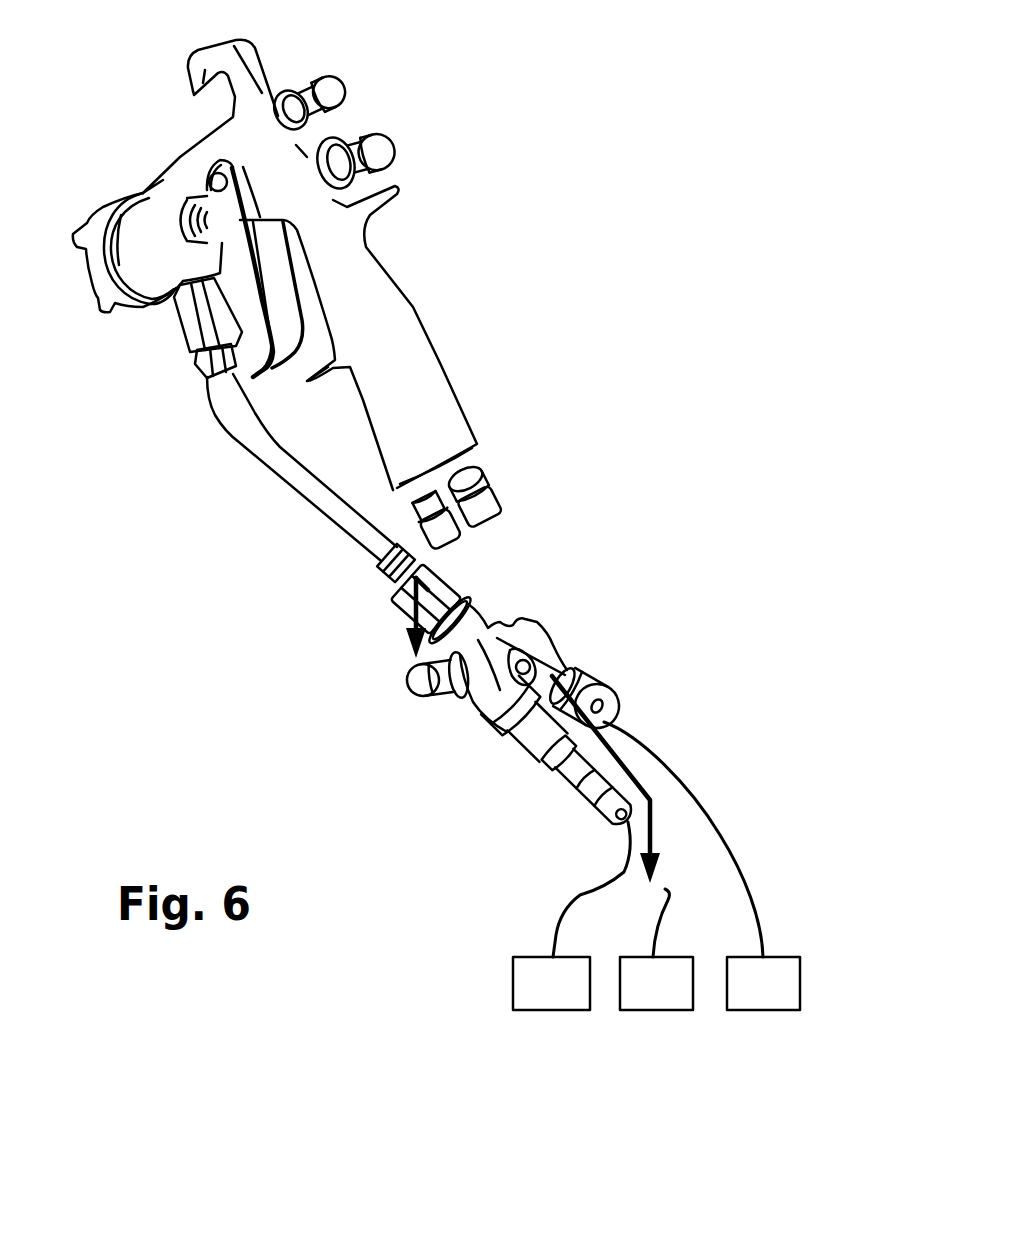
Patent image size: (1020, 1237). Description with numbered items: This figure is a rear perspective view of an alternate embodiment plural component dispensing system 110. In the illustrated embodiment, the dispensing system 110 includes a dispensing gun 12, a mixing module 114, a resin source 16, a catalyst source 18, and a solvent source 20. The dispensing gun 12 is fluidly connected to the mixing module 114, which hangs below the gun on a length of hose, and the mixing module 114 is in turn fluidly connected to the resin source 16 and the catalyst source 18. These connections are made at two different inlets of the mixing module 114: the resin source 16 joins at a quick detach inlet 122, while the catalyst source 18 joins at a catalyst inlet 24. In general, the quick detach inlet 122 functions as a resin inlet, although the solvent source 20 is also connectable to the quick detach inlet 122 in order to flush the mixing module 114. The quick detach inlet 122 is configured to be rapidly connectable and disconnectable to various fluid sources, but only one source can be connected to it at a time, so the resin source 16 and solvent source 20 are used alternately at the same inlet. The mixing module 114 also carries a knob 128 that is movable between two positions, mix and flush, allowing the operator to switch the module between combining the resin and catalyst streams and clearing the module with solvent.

The plural component dispensing system 110 is at (548, 128).
The dispensing gun 12 is at (416, 308).
The mixing module 114 is at (553, 618).
The knob 128 is at (424, 700).
The catalyst inlet 24 is at (612, 698).
The quick detach inlet 122 is at (573, 797).
The resin source 16 is at (547, 1010).
The solvent source 20 is at (653, 1010).
The catalyst source 18 is at (760, 1010).